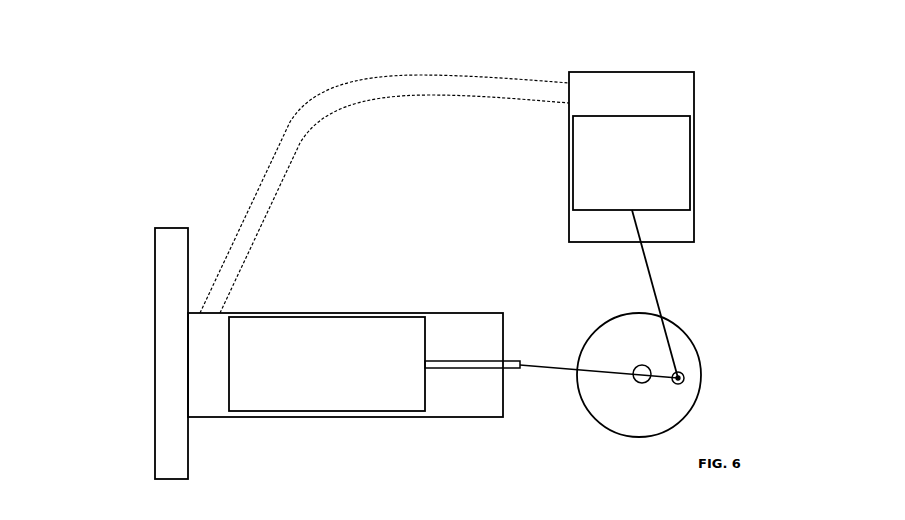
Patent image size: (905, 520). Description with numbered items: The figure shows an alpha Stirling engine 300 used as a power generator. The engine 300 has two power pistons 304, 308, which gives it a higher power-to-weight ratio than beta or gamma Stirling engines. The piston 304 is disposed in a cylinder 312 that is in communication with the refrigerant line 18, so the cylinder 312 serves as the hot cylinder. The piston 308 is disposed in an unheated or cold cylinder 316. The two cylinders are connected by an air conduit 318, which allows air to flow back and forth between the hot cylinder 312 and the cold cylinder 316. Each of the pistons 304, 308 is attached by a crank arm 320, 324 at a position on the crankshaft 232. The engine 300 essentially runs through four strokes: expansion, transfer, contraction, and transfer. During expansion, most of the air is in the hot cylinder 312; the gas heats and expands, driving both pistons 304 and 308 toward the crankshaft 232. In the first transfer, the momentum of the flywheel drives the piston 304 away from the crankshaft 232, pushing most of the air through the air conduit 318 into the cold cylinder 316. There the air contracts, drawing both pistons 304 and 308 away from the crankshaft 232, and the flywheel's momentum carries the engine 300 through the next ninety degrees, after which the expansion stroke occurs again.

The alpha Stirling engine 300 is at (148, 120).
The refrigerant line 18 is at (170, 273).
The cylinder 312 is at (207, 390).
The power piston 304 is at (333, 382).
The crank arm 320 is at (537, 372).
The crankshaft 232 is at (680, 403).
The crank arm 324 is at (657, 288).
The cold cylinder 316 is at (694, 90).
The power piston 308 is at (663, 172).
The air conduit 318 is at (293, 120).